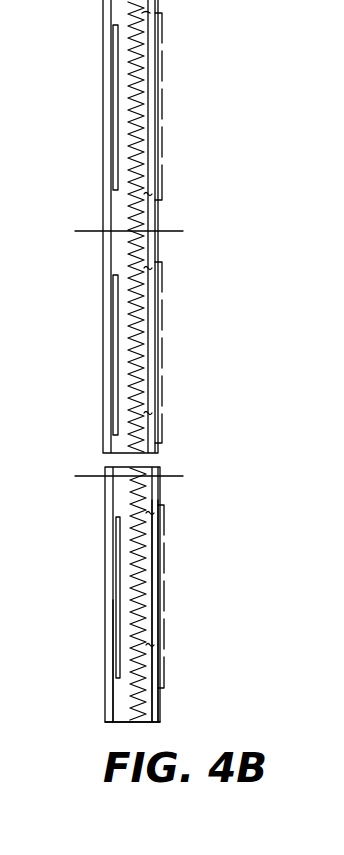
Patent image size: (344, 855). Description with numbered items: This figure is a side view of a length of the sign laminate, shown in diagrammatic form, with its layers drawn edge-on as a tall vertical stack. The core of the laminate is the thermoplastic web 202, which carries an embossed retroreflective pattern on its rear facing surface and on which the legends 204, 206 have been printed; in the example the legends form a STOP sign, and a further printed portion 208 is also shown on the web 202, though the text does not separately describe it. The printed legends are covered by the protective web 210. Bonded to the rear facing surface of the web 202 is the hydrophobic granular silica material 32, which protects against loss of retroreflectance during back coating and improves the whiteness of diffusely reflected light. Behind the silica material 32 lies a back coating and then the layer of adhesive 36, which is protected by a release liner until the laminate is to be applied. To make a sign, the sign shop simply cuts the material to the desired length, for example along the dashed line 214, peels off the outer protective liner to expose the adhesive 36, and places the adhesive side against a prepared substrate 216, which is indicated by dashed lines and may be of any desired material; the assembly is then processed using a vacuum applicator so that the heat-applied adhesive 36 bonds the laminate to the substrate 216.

The hydrophobic granular silica material 32 is at (134, 629).
The adhesive layer 36 is at (155, 587).
The thermoplastic web 202 is at (128, 673).
The legend 204 is at (112, 99).
The legend 206 is at (115, 351).
The third segment 208 is at (118, 613).
The protective web 210 is at (108, 706).
The dashed line 214 is at (97, 231).
The substrate 216 is at (162, 81).